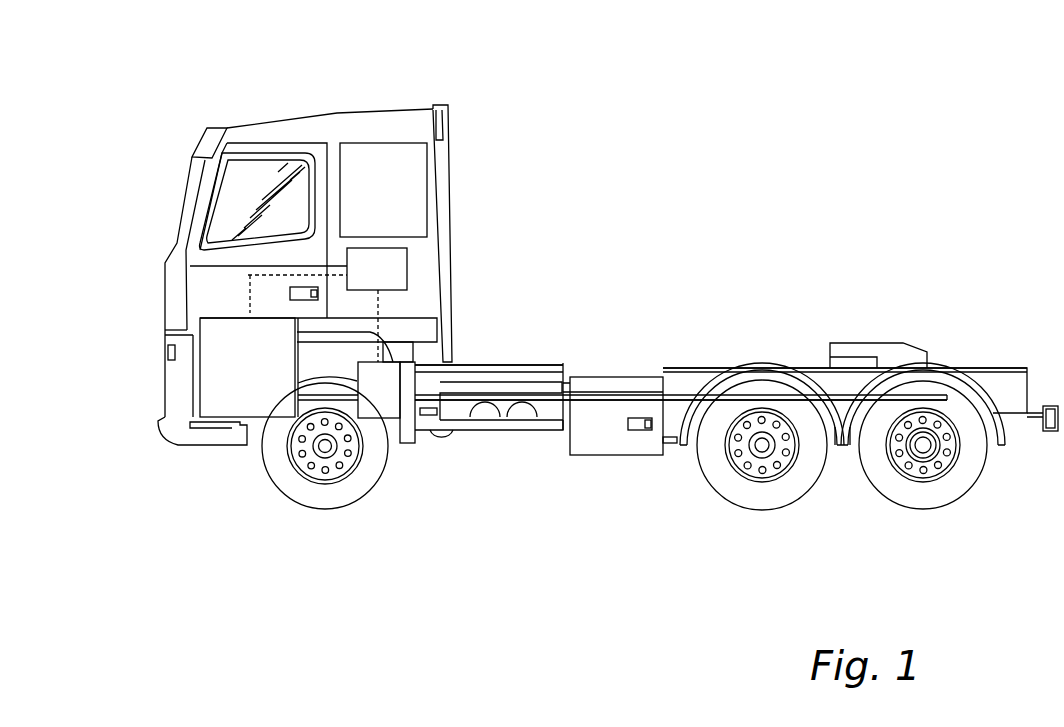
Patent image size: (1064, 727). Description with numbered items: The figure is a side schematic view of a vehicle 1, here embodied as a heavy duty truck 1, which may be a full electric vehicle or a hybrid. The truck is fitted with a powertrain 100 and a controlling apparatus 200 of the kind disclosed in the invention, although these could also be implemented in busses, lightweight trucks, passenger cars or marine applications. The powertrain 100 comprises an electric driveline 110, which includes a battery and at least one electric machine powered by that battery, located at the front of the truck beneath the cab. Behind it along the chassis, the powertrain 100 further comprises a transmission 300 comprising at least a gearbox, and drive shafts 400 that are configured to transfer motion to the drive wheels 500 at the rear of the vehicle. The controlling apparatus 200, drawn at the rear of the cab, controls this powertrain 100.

The vehicle 1 is at (212, 109).
The powertrain 100 is at (620, 240).
The electric driveline 110 is at (217, 418).
The controlling apparatus 200 is at (393, 273).
The transmission 300 is at (400, 405).
The drive shafts 400 is at (672, 368).
The drive wheels 500 is at (778, 478).